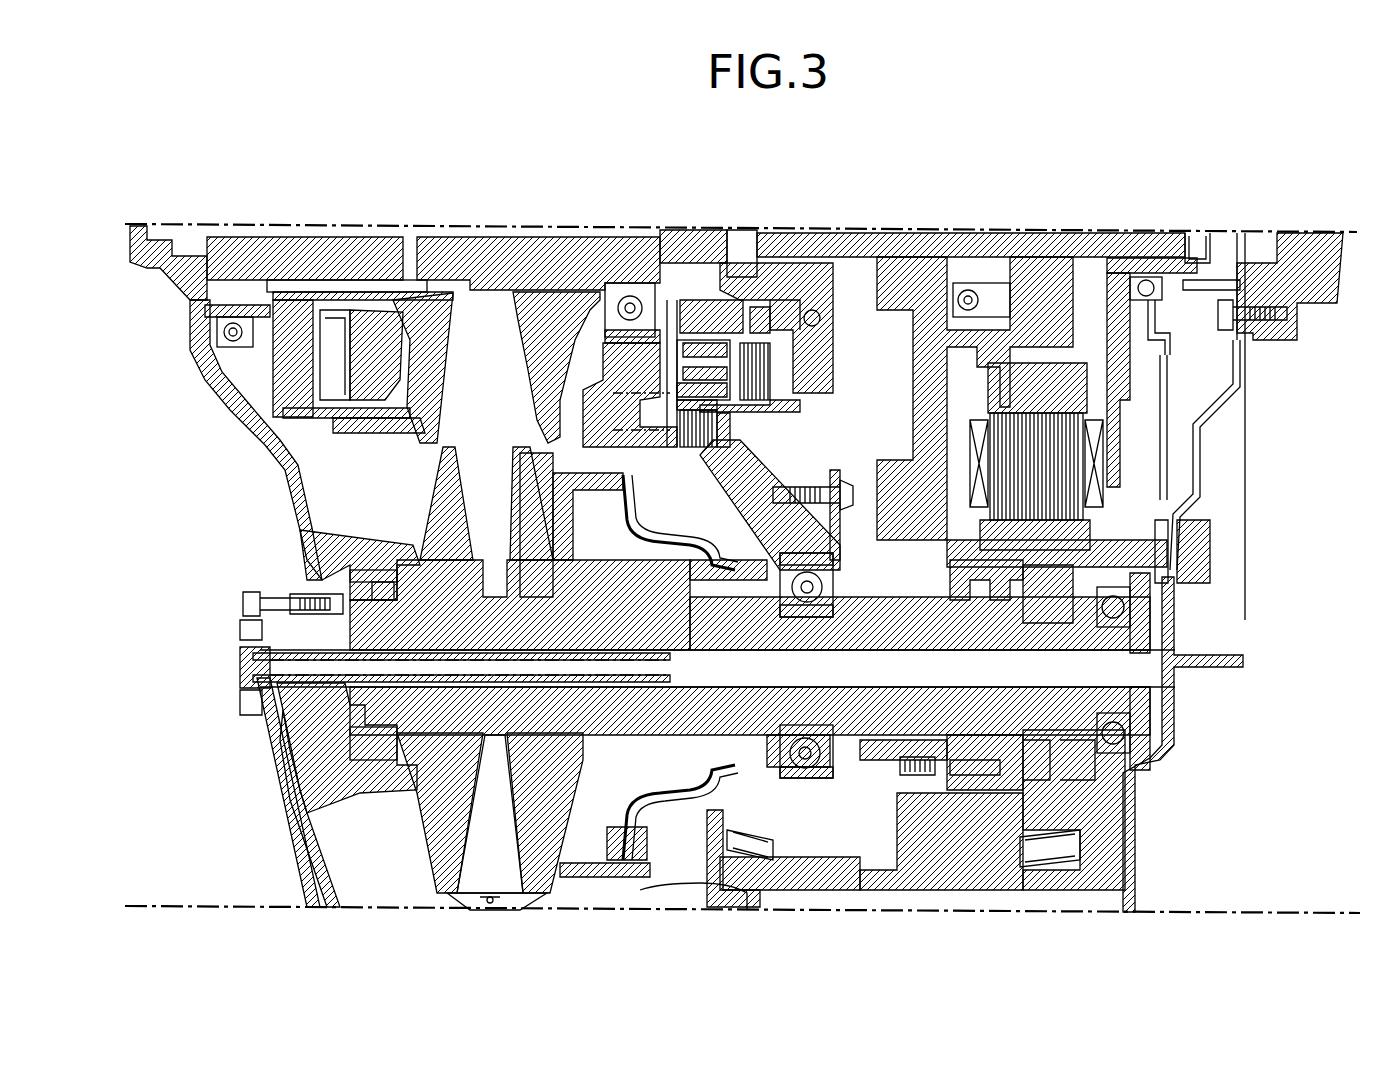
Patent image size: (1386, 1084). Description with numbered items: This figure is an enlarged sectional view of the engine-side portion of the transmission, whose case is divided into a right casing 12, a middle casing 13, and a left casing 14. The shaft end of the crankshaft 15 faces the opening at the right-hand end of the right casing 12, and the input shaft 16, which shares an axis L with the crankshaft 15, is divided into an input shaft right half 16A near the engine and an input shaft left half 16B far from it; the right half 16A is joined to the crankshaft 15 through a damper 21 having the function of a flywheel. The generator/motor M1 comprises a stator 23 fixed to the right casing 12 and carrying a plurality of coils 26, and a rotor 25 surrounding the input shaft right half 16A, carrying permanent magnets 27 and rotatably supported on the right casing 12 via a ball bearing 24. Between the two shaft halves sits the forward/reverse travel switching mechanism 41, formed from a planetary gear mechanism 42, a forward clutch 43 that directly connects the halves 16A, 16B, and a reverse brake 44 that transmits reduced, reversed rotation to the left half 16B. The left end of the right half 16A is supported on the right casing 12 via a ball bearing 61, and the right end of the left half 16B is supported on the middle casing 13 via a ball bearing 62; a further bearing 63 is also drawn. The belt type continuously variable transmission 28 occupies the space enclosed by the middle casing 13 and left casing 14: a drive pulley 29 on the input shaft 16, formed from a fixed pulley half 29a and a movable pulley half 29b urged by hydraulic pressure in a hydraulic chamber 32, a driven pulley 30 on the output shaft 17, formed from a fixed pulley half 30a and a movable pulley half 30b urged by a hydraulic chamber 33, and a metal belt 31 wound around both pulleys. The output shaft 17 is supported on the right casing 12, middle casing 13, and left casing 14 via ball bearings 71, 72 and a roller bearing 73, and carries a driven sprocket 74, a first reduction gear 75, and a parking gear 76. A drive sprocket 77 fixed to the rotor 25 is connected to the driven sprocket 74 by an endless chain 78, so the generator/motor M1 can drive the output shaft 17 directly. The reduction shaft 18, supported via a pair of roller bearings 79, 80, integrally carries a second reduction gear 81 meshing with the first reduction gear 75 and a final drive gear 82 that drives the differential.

The right casing 12 is at (1172, 733).
The middle casing 13 is at (750, 493).
The left casing 14 is at (277, 470).
The crankshaft 15 is at (1317, 300).
The input shaft 16 is at (757, 160).
The input shaft right half 16A is at (770, 247).
The input shaft left half 16B is at (657, 257).
The output shaft 17 is at (862, 633).
The reduction shaft 18 is at (935, 877).
The damper 21 is at (1222, 433).
The stator 23 is at (965, 523).
The ball bearing 24 is at (972, 302).
The rotor 25 is at (1082, 293).
The coils 26 is at (975, 457).
The permanent magnets 27 is at (1047, 362).
The belt type continuously variable transmission 28 is at (405, 807).
The drive pulley 29 is at (527, 188).
The fixed pulley half 29a is at (518, 335).
The movable pulley half 29b is at (455, 345).
The driven pulley 30 is at (533, 413).
The fixed pulley half 30a is at (453, 493).
The movable pulley half 30b is at (530, 510).
The metal belt 31 is at (488, 873).
The hydraulic chamber 32 is at (387, 338).
The hydraulic chamber 33 is at (574, 527).
The forward/reverse travel switching mechanism 41 is at (825, 398).
The planetary gear mechanism 42 is at (665, 363).
The forward clutch 43 is at (765, 420).
The reverse brake 44 is at (697, 450).
The ball bearing 61 is at (745, 262).
The ball bearing 62 is at (628, 305).
The bearing 63 is at (230, 347).
The ball bearing 71 is at (1120, 612).
The ball bearing 72 is at (815, 585).
The roller bearing 73 is at (368, 560).
The driven sprocket 74 is at (907, 737).
The first reduction gear 75 is at (1020, 757).
The parking gear 76 is at (1090, 760).
The drive sprocket 77 is at (917, 317).
The endless chain 78 is at (917, 777).
The roller bearing 79 is at (1047, 845).
The roller bearing 80 is at (780, 850).
The second reduction gear 81 is at (975, 760).
The final drive gear 82 is at (867, 833).
The axis L is at (927, 228).
The generator/motor M1 is at (1100, 517).